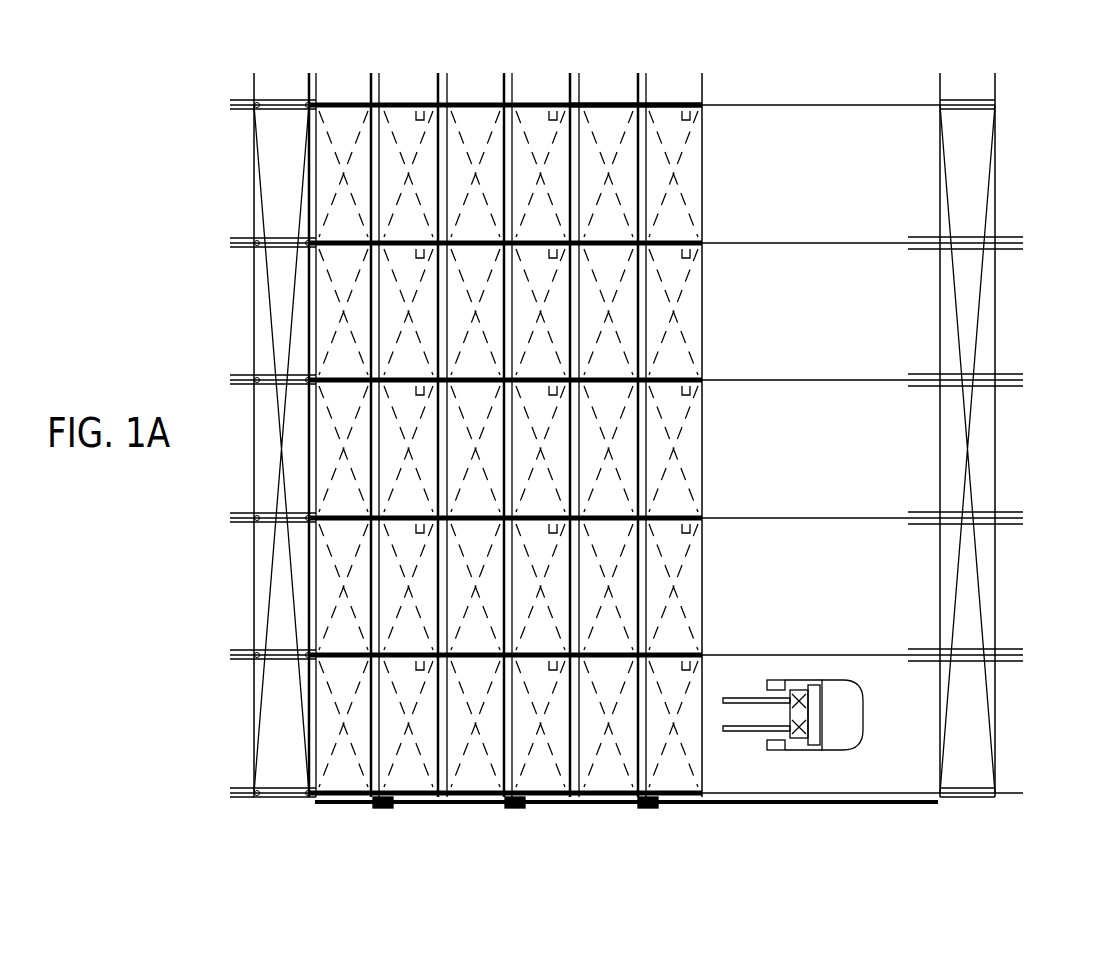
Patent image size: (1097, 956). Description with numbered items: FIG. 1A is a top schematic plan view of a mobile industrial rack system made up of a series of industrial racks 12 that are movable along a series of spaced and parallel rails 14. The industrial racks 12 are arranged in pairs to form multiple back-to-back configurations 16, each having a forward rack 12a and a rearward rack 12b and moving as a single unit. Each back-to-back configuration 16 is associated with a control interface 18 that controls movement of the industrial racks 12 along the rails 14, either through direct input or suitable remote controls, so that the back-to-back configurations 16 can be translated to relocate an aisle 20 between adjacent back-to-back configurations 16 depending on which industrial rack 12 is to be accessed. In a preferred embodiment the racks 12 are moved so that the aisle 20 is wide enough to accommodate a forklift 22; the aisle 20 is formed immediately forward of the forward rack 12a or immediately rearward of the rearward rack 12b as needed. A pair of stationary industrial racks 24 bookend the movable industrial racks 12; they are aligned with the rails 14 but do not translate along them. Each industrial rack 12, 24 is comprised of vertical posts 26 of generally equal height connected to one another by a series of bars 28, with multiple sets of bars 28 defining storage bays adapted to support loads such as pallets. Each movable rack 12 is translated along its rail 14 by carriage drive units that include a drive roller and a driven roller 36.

The industrial rack 12 is at (343, 765).
The forward rack 12a is at (692, 710).
The rearward rack 12b is at (607, 772).
The rail 14 is at (797, 103).
The back-to-back configuration 16 is at (568, 65).
The control interface 18 is at (397, 812).
The aisle 20 is at (853, 140).
The forklift 22 is at (833, 758).
The stationary industrial rack 24 is at (282, 762).
The vertical post 26 is at (437, 98).
The bar 28 is at (705, 292).
The driven roller 36 is at (702, 803).